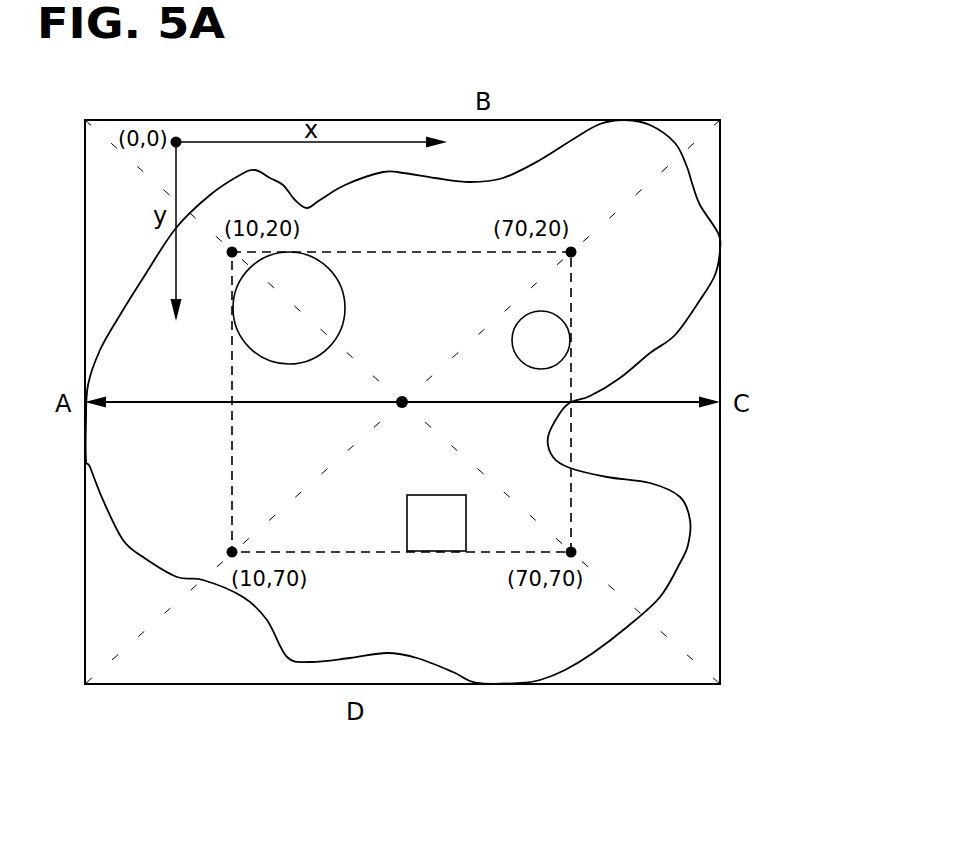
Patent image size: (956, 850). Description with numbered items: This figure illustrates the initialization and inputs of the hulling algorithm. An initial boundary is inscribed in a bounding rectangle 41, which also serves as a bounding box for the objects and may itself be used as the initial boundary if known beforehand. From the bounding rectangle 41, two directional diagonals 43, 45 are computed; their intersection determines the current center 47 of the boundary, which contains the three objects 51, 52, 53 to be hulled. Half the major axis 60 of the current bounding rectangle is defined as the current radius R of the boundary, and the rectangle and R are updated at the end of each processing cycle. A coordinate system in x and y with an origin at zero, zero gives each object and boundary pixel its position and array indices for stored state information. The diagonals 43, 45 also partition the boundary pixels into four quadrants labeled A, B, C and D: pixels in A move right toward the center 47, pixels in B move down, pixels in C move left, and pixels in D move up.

The bounding rectangle 41 is at (720, 503).
The diagonal 43 is at (667, 637).
The diagonal 45 is at (128, 646).
The center 47 is at (402, 408).
The object 51 is at (333, 298).
The object 52 is at (563, 332).
The object 53 is at (432, 546).
The major axis 60 is at (135, 403).